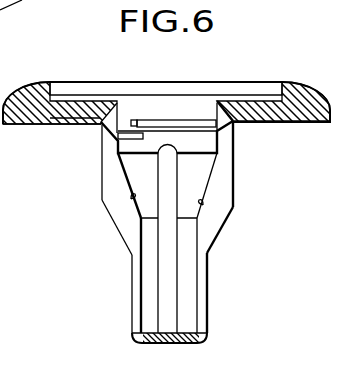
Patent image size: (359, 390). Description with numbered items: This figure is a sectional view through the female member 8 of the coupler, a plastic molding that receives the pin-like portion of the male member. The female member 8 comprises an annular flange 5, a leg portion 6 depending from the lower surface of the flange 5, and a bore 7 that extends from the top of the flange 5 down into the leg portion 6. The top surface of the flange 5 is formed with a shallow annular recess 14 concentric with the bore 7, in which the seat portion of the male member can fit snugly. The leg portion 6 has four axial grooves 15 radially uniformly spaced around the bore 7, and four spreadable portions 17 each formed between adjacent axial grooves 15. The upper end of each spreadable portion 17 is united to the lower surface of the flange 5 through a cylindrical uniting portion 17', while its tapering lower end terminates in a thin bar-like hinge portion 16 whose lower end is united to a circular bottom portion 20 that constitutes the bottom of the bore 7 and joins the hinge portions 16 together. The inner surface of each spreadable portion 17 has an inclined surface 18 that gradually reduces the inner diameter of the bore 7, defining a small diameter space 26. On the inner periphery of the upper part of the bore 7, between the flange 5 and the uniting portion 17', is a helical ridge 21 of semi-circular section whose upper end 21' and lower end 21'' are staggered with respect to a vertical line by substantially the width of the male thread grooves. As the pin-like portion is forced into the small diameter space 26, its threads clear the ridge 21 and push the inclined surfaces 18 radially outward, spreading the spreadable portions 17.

The flange 5 is at (41, 126).
The leg portion 6 is at (68, 196).
The bore 7 is at (203, 151).
The female member 8 is at (37, 141).
The annular recess 14 is at (68, 86).
The axial grooves 15 is at (108, 175).
The hinge portions 16 is at (132, 255).
The spreadable portions 17 is at (162, 222).
The cylindrical uniting portion 17' is at (173, 164).
The inclined surface 18 is at (132, 197).
The bottom portion 20 is at (186, 346).
The ridge 21 is at (159, 90).
The upper end of ridge 21' is at (147, 88).
The lower end of ridge 21'' is at (154, 87).
The small diameter space 26 is at (170, 310).